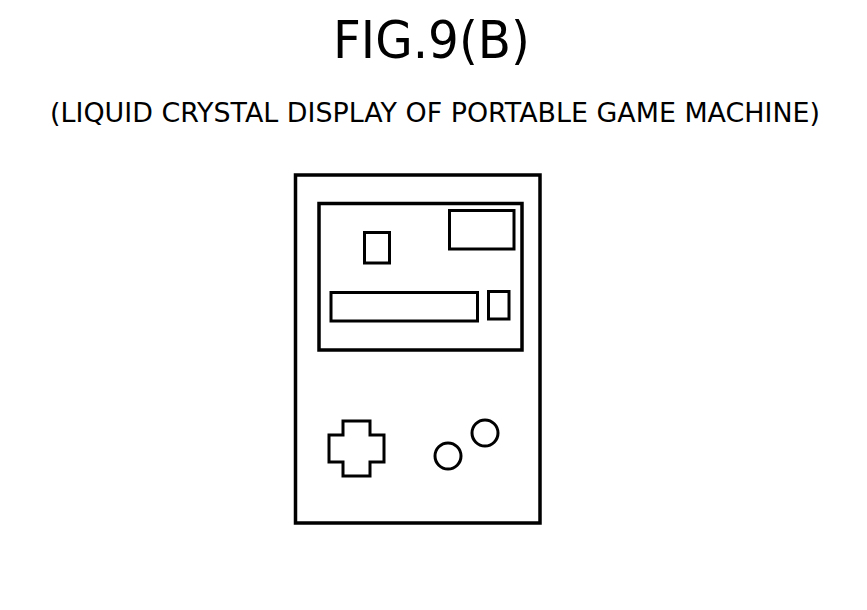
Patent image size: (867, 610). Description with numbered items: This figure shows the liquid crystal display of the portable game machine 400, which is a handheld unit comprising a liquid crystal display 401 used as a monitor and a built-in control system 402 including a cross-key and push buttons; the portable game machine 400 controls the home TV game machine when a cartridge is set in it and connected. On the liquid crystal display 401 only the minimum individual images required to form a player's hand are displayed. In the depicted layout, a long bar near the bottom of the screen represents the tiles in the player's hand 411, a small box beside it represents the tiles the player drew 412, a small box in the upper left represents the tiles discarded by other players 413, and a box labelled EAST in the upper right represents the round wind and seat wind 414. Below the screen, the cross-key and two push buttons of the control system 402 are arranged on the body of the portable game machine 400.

The portable game machine 400 is at (541, 408).
The liquid crystal display 401 is at (509, 280).
The control system 402 is at (483, 487).
The tiles in the player's hand 411 is at (362, 318).
The tiles the player drew 412 is at (506, 306).
The tiles discarded by other players 413 is at (366, 256).
The round wind and seat wind 414 is at (507, 223).